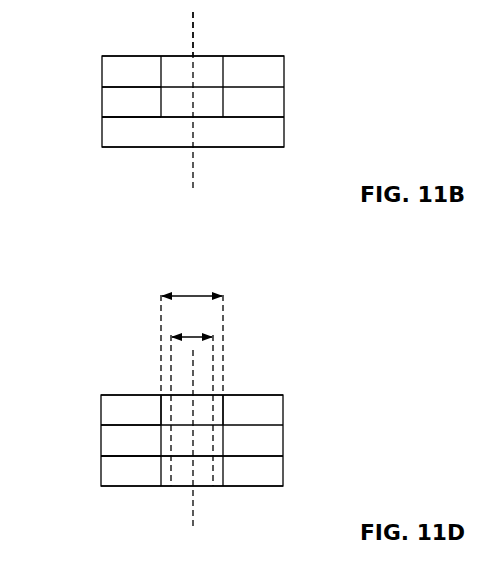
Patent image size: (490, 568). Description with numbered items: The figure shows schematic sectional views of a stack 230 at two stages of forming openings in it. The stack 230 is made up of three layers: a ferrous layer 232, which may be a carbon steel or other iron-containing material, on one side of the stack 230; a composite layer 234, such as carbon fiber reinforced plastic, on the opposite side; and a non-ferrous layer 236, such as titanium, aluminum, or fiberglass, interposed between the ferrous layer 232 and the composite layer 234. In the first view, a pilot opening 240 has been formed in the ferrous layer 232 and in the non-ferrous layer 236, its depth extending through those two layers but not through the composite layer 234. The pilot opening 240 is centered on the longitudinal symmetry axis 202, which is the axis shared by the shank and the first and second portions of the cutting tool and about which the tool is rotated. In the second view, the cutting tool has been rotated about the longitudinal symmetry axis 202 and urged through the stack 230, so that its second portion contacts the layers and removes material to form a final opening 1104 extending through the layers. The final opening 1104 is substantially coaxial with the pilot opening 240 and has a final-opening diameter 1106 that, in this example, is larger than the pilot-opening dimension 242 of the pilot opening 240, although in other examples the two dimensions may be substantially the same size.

In FIG. 11B, the longitudinal symmetry axis 202 is at (193, 182).
In FIG. 11B, the stack 230 is at (157, 163).
In FIG. 11D, the stack 230 is at (159, 501).
In FIG. 11B, the ferrous layer 232 is at (121, 55).
In FIG. 11D, the ferrous layer 232 is at (120, 393).
In FIG. 11B, the non-ferrous layer 236 is at (102, 100).
In FIG. 11D, the non-ferrous layer 236 is at (101, 440).
In FIG. 11B, the composite layer 234 is at (284, 130).
In FIG. 11D, the composite layer 234 is at (283, 470).
In FIG. 11B, the pilot opening 240 is at (204, 50).
In FIG. 11D, the pilot-opening dimension 242 is at (192, 336).
In FIG. 11D, the final opening 1104 is at (199, 494).
In FIG. 11D, the final-opening diameter 1106 is at (192, 295).